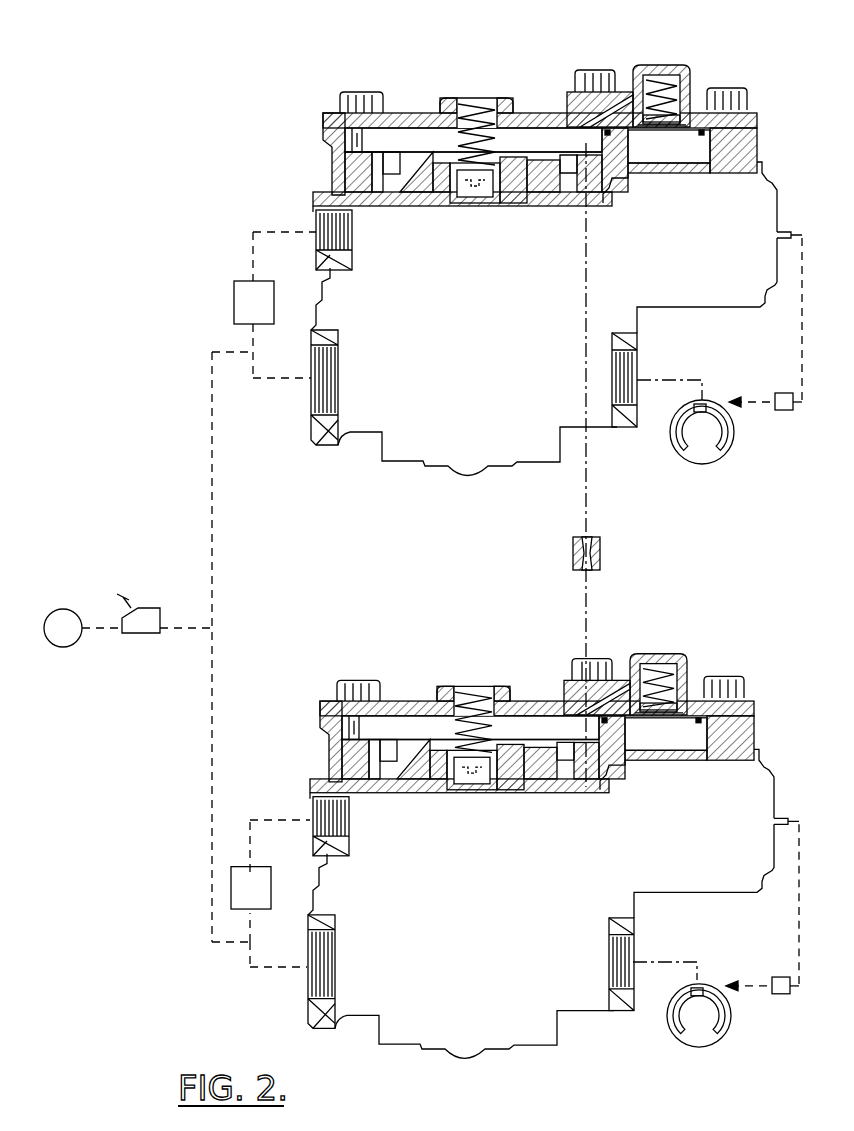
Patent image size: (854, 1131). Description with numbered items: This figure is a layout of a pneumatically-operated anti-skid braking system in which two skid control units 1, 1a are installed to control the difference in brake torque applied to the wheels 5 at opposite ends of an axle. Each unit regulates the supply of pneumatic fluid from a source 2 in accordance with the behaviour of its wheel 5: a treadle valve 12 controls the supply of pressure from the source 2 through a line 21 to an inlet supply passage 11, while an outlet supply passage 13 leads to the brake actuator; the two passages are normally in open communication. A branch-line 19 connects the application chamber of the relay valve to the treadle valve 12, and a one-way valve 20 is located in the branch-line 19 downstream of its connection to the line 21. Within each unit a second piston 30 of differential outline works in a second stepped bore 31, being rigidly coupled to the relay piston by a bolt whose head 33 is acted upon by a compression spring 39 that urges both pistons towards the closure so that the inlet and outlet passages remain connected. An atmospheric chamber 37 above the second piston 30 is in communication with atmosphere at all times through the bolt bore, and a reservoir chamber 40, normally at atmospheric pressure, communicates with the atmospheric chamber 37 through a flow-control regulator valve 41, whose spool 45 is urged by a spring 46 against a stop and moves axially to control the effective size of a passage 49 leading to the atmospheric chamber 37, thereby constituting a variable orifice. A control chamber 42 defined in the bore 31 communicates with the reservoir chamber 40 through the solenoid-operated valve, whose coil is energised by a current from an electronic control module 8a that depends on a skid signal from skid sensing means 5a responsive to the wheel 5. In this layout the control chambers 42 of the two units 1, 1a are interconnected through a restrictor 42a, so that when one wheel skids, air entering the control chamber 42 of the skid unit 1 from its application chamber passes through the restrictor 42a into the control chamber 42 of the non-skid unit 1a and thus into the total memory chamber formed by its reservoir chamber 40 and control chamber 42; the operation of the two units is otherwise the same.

The skid control unit 1 is at (725, 207).
The second skid control unit 1a is at (723, 791).
The source 2 is at (66, 640).
The wheel 5 is at (702, 457).
The skid sensing means 5a is at (736, 398).
The electronic control module 8a is at (781, 412).
The inlet supply passage 11 is at (322, 397).
The treadle valve 12 is at (140, 623).
The outlet supply passage 13 is at (615, 423).
The branch-line 19 is at (322, 240).
The one-way valve 20 is at (234, 304).
The line 21 is at (183, 633).
The second piston 30 is at (340, 182).
The second stepped bore 31 is at (332, 148).
The head 33 is at (450, 168).
The atmospheric chamber 37 is at (393, 140).
The compression spring 39 is at (470, 110).
The reservoir chamber 40 is at (690, 157).
The flow-control regulator valve 41 is at (672, 93).
The control chamber 42 is at (352, 197).
The restrictor 42a is at (670, 536).
The spool 45 is at (677, 107).
The spring 46 is at (659, 82).
The passage 49 is at (642, 100).